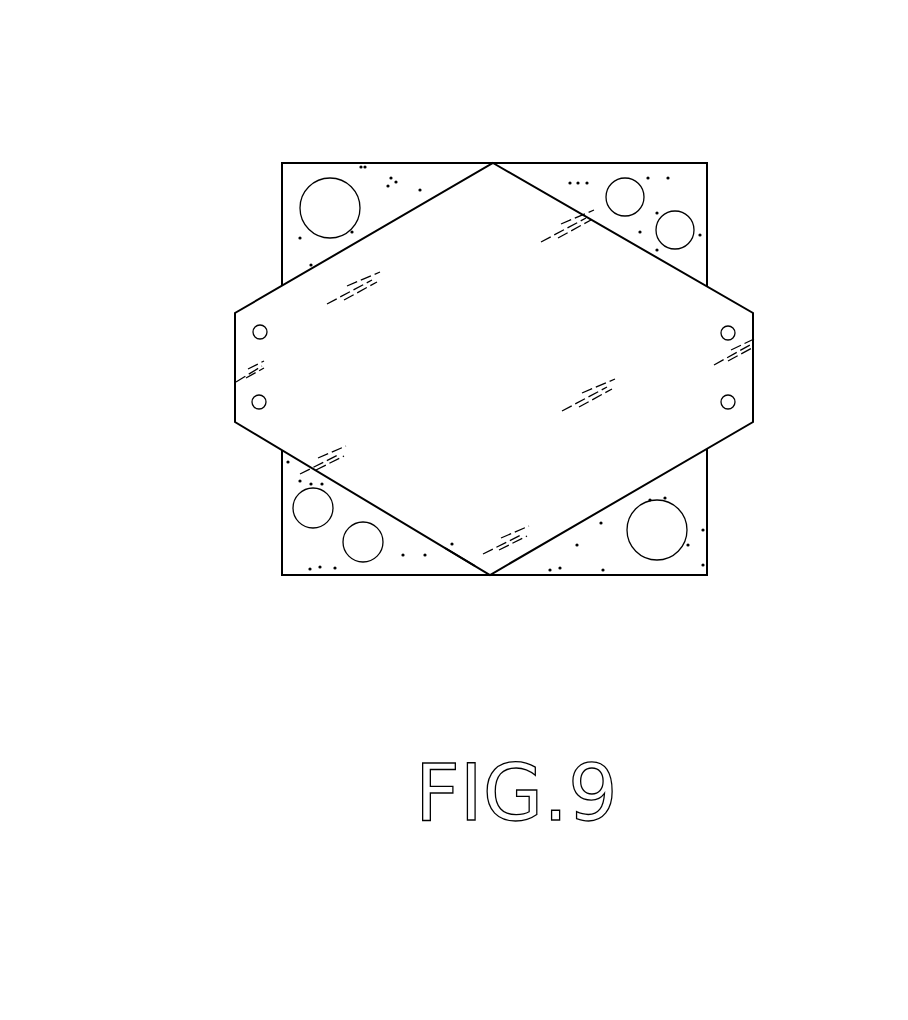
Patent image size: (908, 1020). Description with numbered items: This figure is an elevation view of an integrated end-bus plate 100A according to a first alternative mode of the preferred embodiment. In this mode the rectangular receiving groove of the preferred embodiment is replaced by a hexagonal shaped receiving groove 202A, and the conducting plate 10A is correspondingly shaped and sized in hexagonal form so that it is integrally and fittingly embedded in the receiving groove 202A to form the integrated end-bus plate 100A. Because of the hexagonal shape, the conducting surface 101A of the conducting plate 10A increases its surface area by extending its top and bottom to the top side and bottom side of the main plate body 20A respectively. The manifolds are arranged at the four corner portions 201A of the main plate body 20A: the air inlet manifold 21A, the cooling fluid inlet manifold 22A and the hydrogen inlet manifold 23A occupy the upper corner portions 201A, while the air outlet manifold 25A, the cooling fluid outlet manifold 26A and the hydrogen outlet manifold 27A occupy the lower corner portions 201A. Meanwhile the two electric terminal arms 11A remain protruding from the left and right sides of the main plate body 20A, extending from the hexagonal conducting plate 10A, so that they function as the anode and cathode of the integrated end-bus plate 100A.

The integrated end-bus plate 100A is at (708, 705).
The conducting plate 10A is at (692, 296).
The conducting surface 101A is at (543, 381).
The electric terminal arms 11A is at (240, 342).
The main plate body 20A is at (693, 174).
The corner portions 201A is at (297, 182).
The receiving groove 202A is at (462, 567).
The air inlet manifold 21A is at (303, 227).
The cooling fluid inlet manifold 22A is at (631, 177).
The hydrogen inlet manifold 23A is at (697, 216).
The air outlet manifold 25A is at (670, 570).
The cooling fluid outlet manifold 26A is at (350, 532).
The hydrogen outlet manifold 27A is at (293, 505).